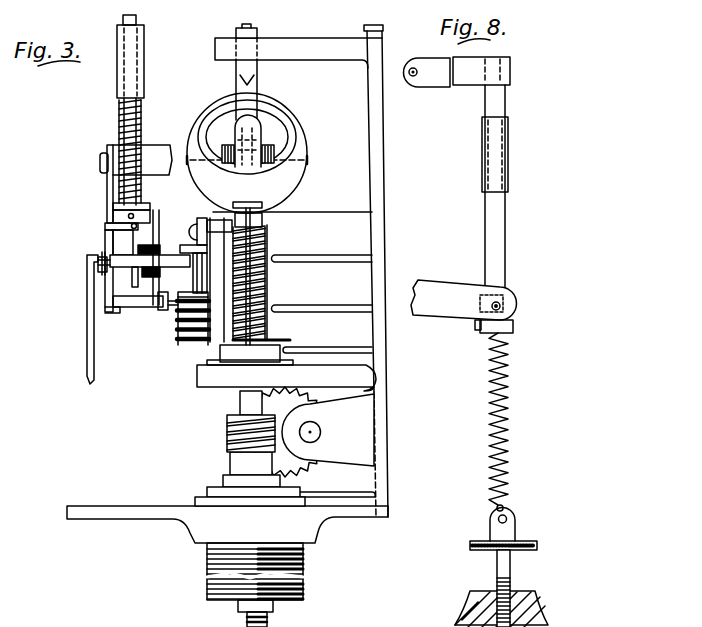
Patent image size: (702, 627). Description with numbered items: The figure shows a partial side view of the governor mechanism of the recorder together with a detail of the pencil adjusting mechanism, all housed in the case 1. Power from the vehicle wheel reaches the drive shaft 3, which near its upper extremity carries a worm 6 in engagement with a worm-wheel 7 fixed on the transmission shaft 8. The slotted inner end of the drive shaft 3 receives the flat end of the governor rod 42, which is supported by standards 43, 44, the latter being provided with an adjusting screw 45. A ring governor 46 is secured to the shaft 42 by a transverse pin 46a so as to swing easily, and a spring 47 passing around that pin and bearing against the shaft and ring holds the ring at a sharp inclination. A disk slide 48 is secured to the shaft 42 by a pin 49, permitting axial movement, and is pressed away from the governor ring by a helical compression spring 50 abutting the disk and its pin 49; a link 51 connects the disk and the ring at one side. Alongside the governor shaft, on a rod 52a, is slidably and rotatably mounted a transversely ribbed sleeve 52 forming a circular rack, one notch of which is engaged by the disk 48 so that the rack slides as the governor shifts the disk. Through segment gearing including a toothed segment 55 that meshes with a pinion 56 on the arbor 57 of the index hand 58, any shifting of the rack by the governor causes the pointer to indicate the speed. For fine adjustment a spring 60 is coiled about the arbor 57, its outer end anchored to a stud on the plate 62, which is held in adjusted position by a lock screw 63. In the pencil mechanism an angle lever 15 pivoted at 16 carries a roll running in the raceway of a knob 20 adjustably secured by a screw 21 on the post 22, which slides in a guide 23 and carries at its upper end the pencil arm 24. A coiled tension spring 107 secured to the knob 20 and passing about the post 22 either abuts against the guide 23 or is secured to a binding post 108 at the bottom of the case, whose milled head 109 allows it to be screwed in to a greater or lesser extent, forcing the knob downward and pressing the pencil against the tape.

In FIG. 3, the case 1 is at (390, 448).
In FIG. 8, the case 1 is at (548, 610).
In FIG. 3, the drive shaft 3 is at (238, 410).
In FIG. 3, the worm 6 is at (228, 437).
In FIG. 3, the worm-wheel 7 is at (327, 472).
In FIG. 3, the transmission shaft 8 is at (321, 432).
In FIG. 3, the angle lever 15 is at (107, 183).
In FIG. 8, the angle lever 15 is at (455, 320).
In FIG. 3, the pivot 16 is at (100, 160).
In FIG. 8, the knob 20 is at (513, 328).
In FIG. 8, the screw 21 is at (477, 332).
In FIG. 3, the post 22 is at (122, 113).
In FIG. 8, the post 22 is at (505, 207).
In FIG. 3, the guide 23 is at (117, 70).
In FIG. 8, the guide 23 is at (510, 137).
In FIG. 8, the pencil arm 24 is at (468, 88).
In FIG. 3, the governor rod 42 is at (240, 87).
In FIG. 3, the standard 43 is at (286, 301).
In FIG. 3, the standard 44 is at (352, 52).
In FIG. 3, the adjusting screw 45 is at (238, 65).
In FIG. 3, the ring governor 46 is at (293, 175).
In FIG. 3, the transverse pin 46a is at (285, 128).
In FIG. 3, the spring 47 is at (262, 130).
In FIG. 3, the disk slide 48 is at (264, 338).
In FIG. 3, the pin 49 is at (260, 235).
In FIG. 3, the helical compression spring 50 is at (264, 267).
In FIG. 3, the link 51 is at (264, 282).
In FIG. 3, the transversely ribbed sleeve 52 is at (185, 345).
In FIG. 3, the rod 52a is at (193, 270).
In FIG. 3, the toothed segment 55 is at (159, 222).
In FIG. 3, the pinion 56 is at (160, 250).
In FIG. 3, the arbor 57 is at (97, 262).
In FIG. 3, the index hand 58 is at (87, 345).
In FIG. 3, the spring 60 is at (155, 288).
In FIG. 3, the plate 62 is at (105, 229).
In FIG. 3, the lock screw 63 is at (105, 280).
In FIG. 3, the coiled tension spring 107 is at (141, 138).
In FIG. 8, the coiled tension spring 107 is at (510, 465).
In FIG. 8, the binding post 108 is at (517, 520).
In FIG. 8, the milled head 109 is at (538, 546).